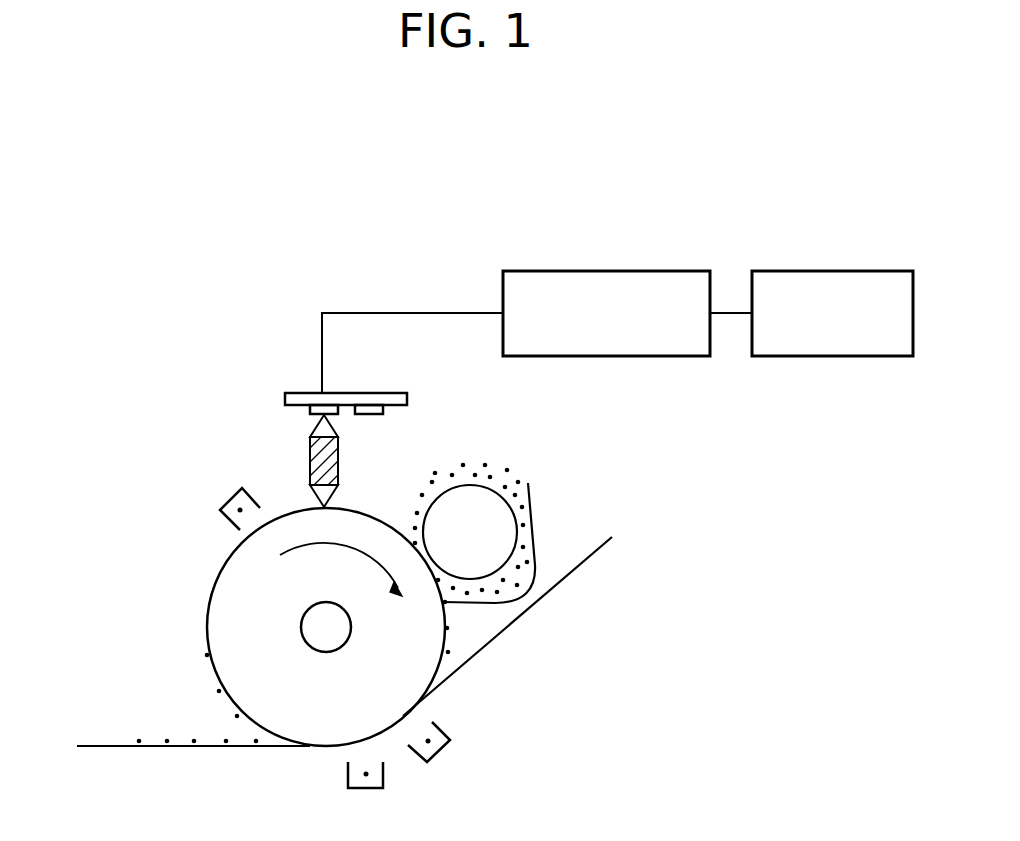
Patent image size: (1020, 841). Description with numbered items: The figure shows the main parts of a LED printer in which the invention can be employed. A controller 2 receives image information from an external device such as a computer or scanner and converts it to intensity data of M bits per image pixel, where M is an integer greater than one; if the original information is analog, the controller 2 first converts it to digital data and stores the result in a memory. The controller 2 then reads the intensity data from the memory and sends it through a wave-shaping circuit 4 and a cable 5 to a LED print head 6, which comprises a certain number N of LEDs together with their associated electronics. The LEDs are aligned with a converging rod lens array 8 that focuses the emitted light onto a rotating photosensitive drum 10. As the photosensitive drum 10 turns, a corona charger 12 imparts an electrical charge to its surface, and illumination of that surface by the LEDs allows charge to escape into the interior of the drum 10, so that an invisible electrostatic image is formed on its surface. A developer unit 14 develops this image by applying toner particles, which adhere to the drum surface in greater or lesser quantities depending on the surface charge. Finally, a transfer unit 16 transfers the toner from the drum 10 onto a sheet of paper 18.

The controller 2 is at (872, 270).
The wave-shaping circuit 4 is at (650, 270).
The cable 5 is at (425, 313).
The LED print head 6 is at (293, 392).
The converging rod lens array 8 is at (310, 467).
The photosensitive drum 10 is at (212, 593).
The corona charger 12 is at (227, 500).
The developer unit 14 is at (535, 520).
The transfer unit 16 is at (400, 760).
The sheet of paper 18 is at (517, 618).